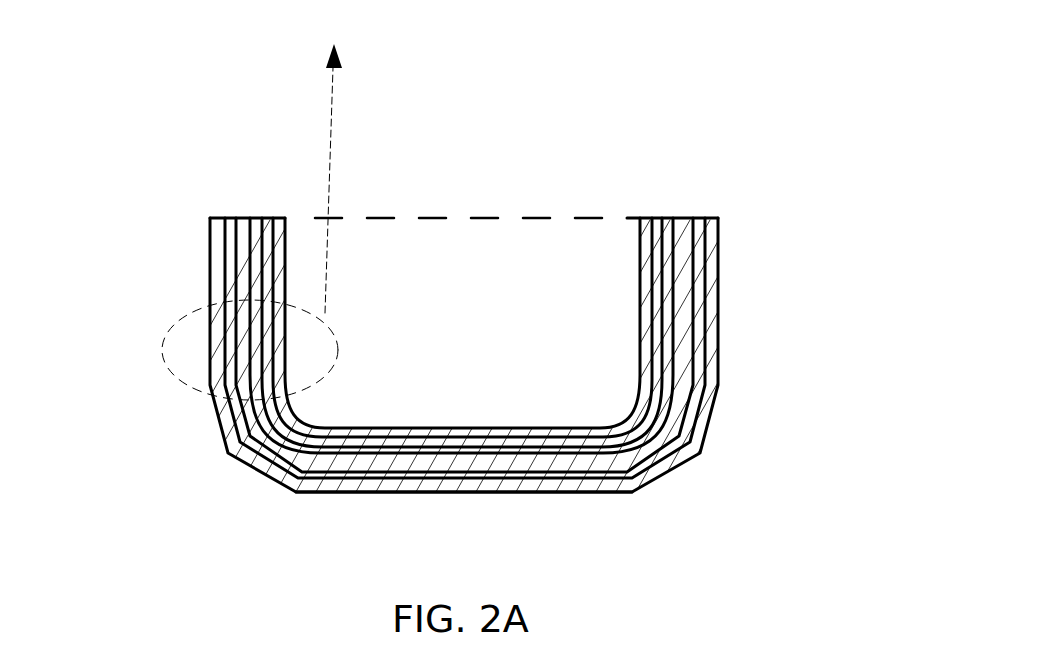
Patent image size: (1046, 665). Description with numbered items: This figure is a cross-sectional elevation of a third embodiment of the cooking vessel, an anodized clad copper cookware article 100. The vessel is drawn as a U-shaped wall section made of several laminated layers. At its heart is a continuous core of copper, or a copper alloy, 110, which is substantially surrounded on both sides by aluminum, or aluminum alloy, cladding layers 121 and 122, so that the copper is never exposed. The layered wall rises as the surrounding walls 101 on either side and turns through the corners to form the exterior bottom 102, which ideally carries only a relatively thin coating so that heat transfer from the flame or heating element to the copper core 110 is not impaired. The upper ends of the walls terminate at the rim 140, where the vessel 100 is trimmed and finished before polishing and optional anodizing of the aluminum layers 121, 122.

The cookware article 100 is at (742, 120).
The surrounding walls 101 is at (730, 342).
The exterior bottom 102 is at (498, 500).
The continuous core of copper 110 is at (718, 218).
The aluminum cladding layer 121 is at (260, 217).
The aluminum cladding layer 122 is at (225, 217).
The rim 140 is at (675, 200).